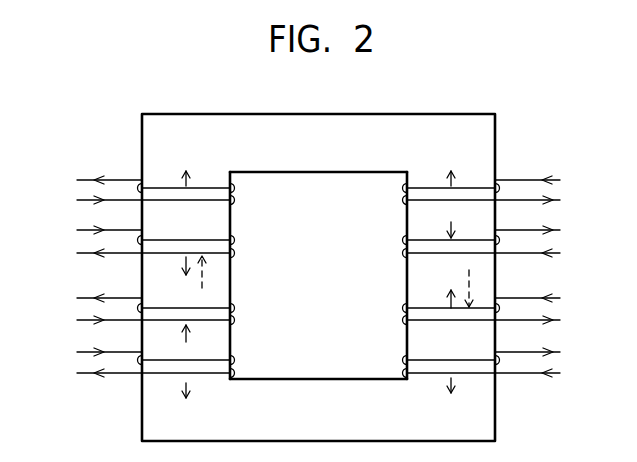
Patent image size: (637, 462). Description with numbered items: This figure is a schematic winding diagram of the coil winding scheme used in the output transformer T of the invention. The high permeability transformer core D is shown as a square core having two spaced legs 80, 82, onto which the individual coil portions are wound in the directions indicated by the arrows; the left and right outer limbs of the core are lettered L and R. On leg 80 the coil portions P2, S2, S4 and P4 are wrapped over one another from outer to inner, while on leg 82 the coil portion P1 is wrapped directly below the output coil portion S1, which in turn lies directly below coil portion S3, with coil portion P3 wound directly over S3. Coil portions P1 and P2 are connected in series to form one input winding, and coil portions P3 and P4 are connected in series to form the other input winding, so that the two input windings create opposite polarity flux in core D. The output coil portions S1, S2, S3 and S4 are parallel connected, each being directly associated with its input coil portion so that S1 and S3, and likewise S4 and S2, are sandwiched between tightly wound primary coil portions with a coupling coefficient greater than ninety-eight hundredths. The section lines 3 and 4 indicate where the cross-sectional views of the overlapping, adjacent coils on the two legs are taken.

The transformer core D is at (321, 111).
The output transformer T is at (497, 100).
The left leg of core L is at (192, 240).
The right leg of core R is at (457, 238).
The leg 80 is at (223, 282).
The leg 82 is at (415, 277).
The section line 3- 3 is at (134, 176).
The section line 4- 4 is at (392, 176).
The coil portion P1 is at (499, 190).
The coil portion P2 is at (138, 363).
The coil portion P3 is at (498, 364).
The coil portion P4 is at (138, 190).
The output coil portion S1 is at (499, 242).
The output coil portion S2 is at (138, 309).
The output coil portion S3 is at (497, 310).
The output coil portion S4 is at (138, 242).